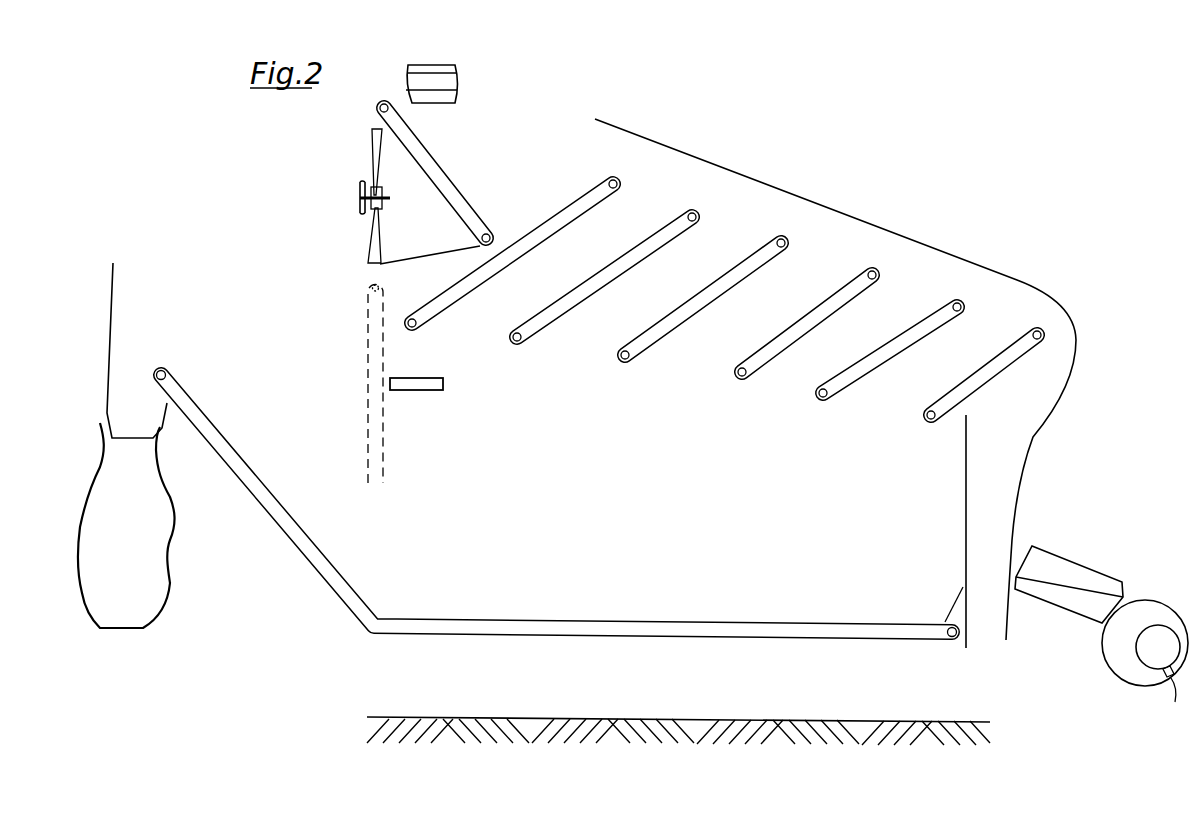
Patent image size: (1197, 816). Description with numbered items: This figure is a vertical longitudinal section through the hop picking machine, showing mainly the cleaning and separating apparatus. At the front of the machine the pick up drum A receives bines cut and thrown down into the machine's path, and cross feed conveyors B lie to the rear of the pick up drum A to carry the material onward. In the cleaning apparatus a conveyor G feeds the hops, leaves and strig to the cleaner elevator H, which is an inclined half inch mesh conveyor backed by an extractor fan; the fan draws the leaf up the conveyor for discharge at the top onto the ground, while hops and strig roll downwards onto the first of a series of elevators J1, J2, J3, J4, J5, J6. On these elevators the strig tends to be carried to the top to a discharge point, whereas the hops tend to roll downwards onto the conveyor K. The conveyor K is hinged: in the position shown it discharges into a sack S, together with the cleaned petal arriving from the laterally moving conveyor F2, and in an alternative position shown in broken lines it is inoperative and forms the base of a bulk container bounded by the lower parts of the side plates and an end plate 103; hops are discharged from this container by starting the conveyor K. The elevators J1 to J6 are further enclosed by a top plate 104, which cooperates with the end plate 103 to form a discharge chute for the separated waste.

The cleaning apparatus conveyor G is at (456, 67).
The cleaner elevator H is at (445, 178).
The elevator J1 is at (598, 191).
The elevator J2 is at (676, 224).
The elevator J3 is at (754, 258).
The elevator J4 is at (855, 280).
The elevator J5 is at (944, 310).
The elevator J6 is at (1022, 336).
The top plate 104 is at (856, 216).
The end plate 103 is at (963, 488).
The conveyor K is at (367, 377).
The laterally moving conveyor F2 is at (410, 379).
The sack S is at (175, 512).
The cross feed conveyors B is at (1077, 567).
The pick up drum A is at (1152, 607).